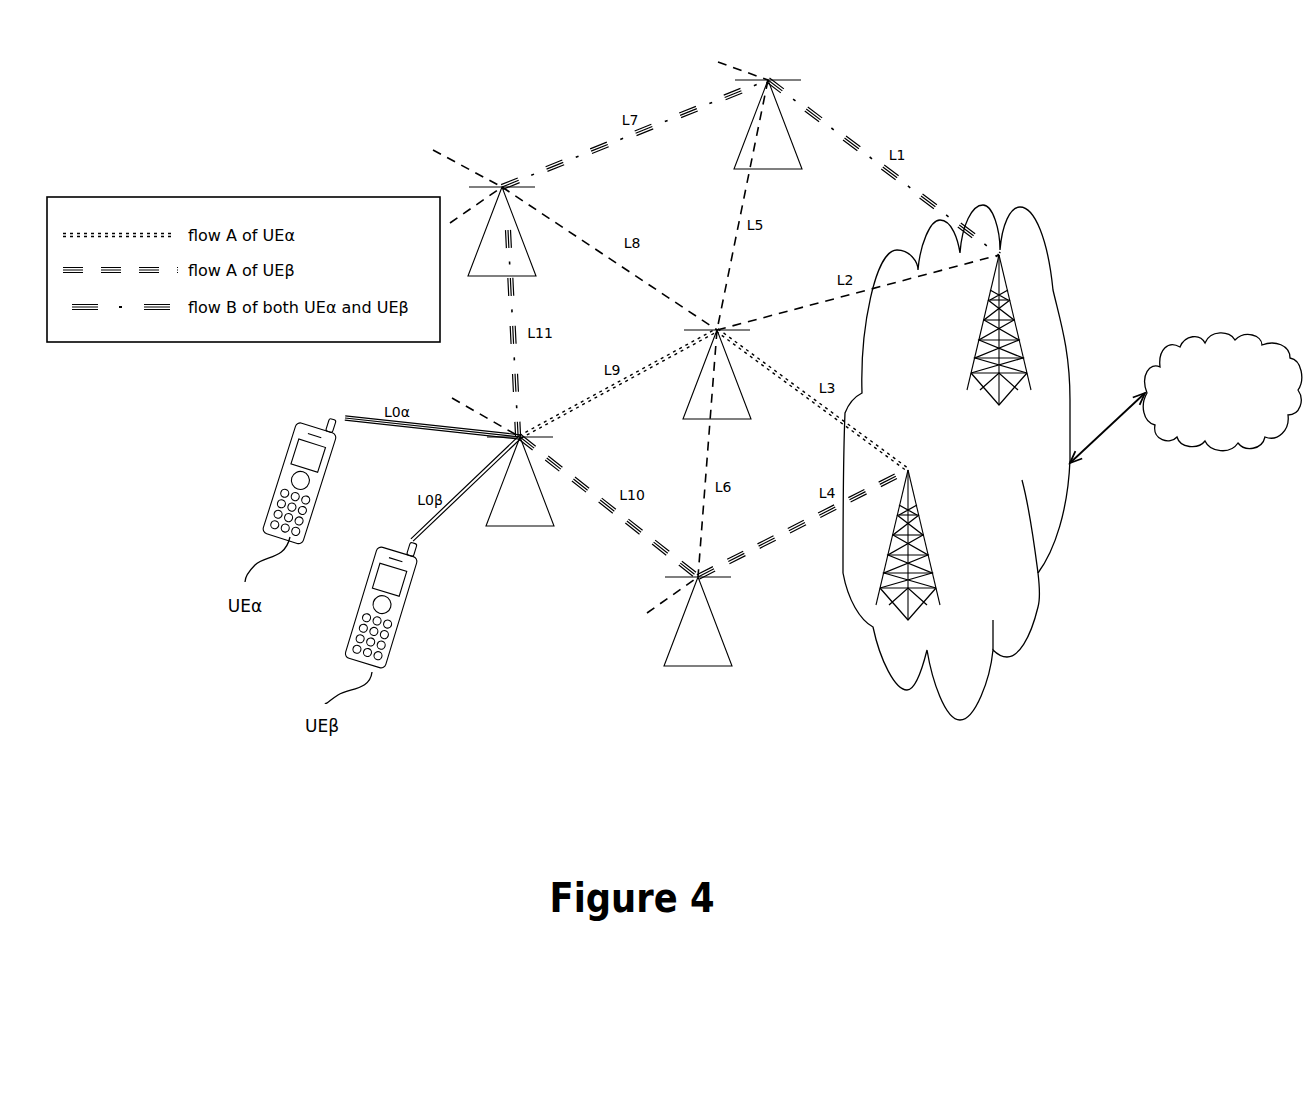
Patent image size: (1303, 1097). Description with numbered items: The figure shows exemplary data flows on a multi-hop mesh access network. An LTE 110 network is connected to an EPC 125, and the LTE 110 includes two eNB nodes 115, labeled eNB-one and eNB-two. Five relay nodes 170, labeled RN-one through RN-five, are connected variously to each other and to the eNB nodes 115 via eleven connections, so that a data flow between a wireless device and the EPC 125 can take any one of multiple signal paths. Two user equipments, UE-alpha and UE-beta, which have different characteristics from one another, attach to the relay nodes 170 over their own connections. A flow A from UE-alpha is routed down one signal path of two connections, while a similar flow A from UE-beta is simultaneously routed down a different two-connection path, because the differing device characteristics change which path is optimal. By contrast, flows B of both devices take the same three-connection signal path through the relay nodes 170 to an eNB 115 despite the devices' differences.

The LTE 110 is at (960, 720).
The eNB node 115 is at (1015, 330).
The EPC 125 is at (1186, 398).
The relay node 170 is at (452, 670).